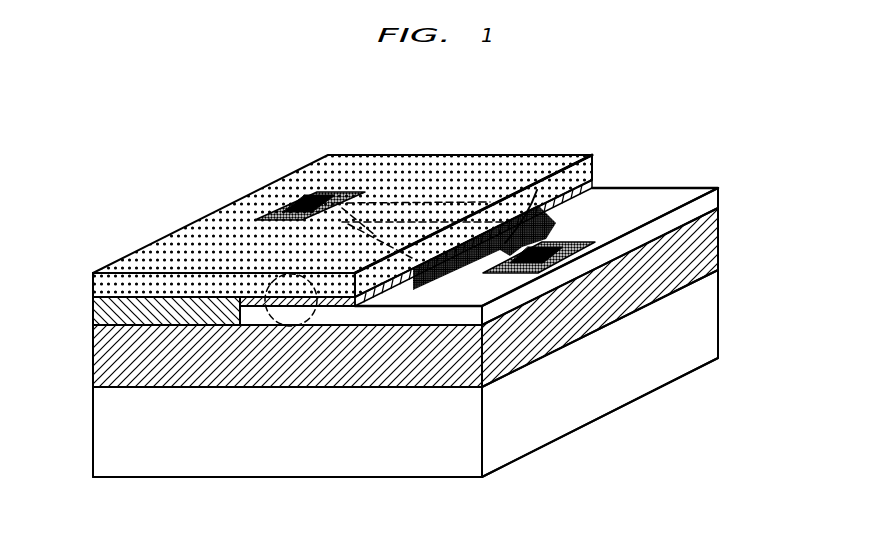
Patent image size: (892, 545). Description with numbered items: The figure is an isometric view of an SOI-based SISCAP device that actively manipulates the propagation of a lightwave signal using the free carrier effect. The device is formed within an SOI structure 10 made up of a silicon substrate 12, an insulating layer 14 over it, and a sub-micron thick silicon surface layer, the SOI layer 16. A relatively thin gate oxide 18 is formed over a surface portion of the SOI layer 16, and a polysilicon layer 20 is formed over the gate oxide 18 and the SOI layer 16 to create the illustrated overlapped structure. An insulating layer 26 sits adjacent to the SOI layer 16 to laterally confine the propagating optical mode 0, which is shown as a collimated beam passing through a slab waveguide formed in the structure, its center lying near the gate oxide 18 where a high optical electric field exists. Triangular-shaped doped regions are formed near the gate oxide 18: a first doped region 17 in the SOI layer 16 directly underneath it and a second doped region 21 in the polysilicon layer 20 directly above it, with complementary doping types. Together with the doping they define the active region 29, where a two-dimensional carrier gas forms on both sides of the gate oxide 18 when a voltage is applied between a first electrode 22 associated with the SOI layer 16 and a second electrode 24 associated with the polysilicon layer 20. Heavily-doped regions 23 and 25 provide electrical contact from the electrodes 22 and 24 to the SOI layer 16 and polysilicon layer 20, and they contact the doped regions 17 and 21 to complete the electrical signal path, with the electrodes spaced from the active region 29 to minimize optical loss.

The SOI structure 10 is at (778, 185).
The silicon substrate 12 is at (102, 432).
The insulating layer 14 is at (102, 355).
The SOI layer 16 is at (716, 200).
The insulating layer 26 is at (100, 310).
The optical mode 0 is at (267, 305).
The polysilicon layer 20 is at (423, 165).
The gate oxide 18 is at (594, 183).
The active region 29 is at (355, 265).
The heavily-doped region 25 is at (272, 216).
The second electrode 24 is at (300, 200).
The second doped region 21 is at (462, 232).
The first doped region 17 is at (537, 190).
The heavily-doped region 23 is at (498, 271).
The first electrode 22 is at (560, 247).